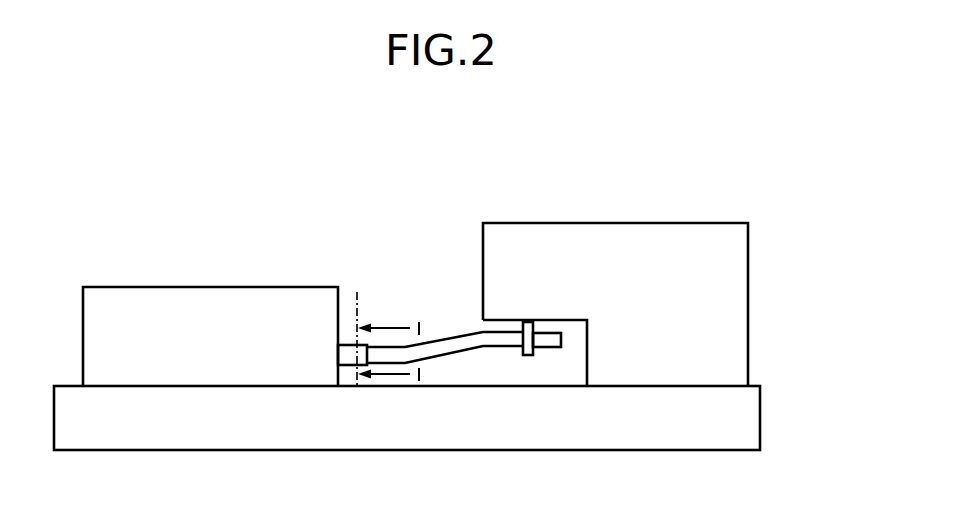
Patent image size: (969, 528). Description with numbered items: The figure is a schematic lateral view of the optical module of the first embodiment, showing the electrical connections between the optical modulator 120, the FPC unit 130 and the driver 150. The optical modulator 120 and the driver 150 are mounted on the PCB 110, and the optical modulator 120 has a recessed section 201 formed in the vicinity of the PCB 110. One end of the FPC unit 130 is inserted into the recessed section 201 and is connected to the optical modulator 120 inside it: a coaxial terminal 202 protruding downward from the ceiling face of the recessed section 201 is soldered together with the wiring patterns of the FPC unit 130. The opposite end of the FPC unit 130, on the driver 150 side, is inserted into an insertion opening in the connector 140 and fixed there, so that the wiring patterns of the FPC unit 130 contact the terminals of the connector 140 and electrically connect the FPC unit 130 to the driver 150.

The Printed Circuits Board (PCB) 110 is at (701, 451).
The optical modulator 120 is at (669, 223).
The Flexible Printed Circuits (FPC) unit 130 is at (456, 337).
The connector 140 is at (345, 345).
The driver 150 is at (127, 267).
The recessed section 201 is at (574, 372).
The coaxial terminal 202 is at (527, 356).